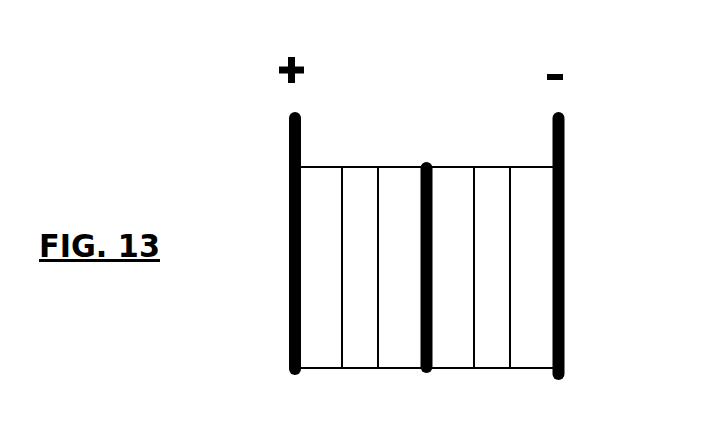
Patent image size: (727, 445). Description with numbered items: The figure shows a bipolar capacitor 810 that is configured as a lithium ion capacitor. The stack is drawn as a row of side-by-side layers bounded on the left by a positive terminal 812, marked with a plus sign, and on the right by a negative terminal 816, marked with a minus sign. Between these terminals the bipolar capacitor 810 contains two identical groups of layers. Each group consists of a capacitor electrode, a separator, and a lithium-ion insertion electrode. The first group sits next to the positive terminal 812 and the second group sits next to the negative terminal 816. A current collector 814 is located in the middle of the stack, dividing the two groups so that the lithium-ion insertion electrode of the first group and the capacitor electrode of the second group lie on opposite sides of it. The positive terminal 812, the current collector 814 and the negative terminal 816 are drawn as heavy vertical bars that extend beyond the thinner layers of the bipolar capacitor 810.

The bipolar capacitor 810 is at (383, 83).
The positive terminal 812 is at (289, 173).
The current collector 814 is at (425, 163).
The negative terminal 816 is at (563, 167).